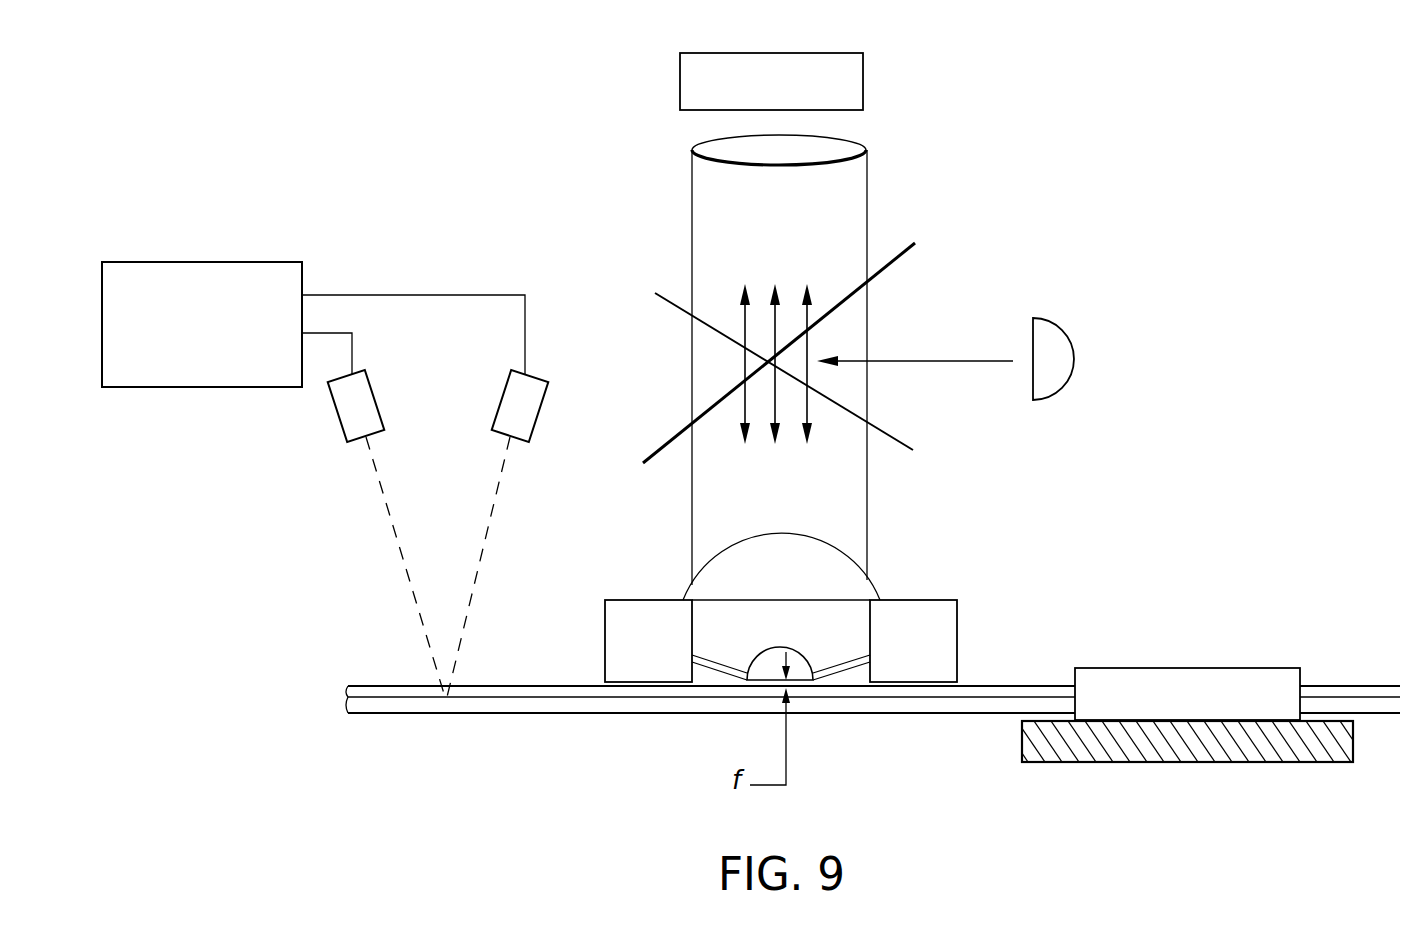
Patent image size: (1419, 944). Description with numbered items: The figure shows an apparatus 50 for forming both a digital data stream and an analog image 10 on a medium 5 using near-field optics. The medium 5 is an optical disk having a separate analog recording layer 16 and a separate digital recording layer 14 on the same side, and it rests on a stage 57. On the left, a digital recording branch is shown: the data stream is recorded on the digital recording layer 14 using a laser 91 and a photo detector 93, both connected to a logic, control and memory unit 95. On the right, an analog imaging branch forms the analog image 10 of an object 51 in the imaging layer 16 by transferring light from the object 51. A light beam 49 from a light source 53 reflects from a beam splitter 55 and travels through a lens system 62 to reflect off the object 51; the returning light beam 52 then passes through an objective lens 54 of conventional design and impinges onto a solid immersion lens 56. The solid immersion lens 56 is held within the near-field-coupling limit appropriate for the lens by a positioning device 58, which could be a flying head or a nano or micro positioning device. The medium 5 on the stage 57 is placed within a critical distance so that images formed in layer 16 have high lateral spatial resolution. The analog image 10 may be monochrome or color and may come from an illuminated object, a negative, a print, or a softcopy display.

The object 51 is at (680, 91).
The lens system 62 is at (840, 150).
The light beam 52 is at (740, 300).
The beam splitter 55 is at (677, 308).
The light beam 49 is at (897, 361).
The light source 53 is at (1055, 345).
The logic, control and memory unit 95 is at (225, 262).
The laser 91 is at (348, 413).
The photo detector 93 is at (508, 397).
The positioning device 58 is at (608, 618).
The objective lens 54 is at (865, 580).
The solid immersion lens 56 is at (760, 677).
The analog image 10 is at (770, 663).
The medium 5 is at (380, 676).
The analog recording layer 16 is at (348, 691).
The digital recording layer 14 is at (348, 708).
The stage 57 is at (1273, 750).
The apparatus 50 is at (1170, 559).